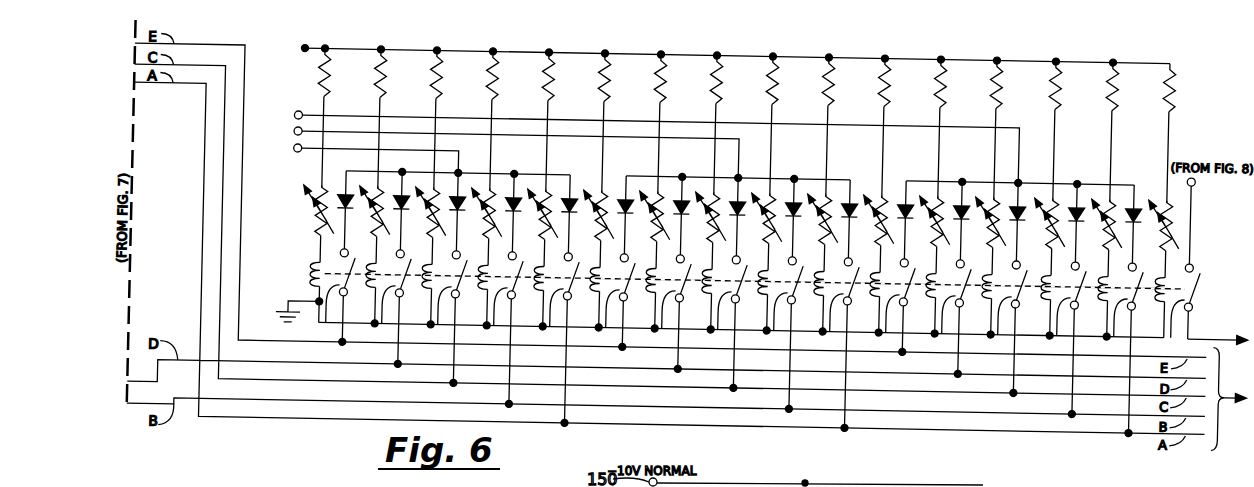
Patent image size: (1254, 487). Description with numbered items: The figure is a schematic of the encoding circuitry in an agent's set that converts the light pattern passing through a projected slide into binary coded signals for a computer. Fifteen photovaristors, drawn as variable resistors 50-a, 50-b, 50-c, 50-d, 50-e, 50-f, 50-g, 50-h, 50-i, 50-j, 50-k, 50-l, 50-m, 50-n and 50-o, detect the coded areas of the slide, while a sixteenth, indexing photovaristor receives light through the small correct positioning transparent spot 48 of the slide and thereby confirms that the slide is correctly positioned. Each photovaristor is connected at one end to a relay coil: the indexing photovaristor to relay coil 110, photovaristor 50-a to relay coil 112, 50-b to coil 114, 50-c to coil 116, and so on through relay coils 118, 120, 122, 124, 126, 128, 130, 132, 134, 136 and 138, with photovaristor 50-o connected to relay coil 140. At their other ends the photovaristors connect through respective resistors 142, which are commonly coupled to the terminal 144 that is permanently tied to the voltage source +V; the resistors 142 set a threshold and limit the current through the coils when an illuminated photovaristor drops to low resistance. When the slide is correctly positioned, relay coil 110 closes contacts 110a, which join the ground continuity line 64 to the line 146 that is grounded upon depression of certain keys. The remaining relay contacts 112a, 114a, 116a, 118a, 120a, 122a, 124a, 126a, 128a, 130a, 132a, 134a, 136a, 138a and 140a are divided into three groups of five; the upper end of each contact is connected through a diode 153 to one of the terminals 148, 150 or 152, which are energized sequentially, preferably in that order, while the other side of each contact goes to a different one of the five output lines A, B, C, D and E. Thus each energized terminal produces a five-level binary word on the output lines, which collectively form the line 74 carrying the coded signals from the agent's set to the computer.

The resistor 142 is at (434, 86).
The terminal 144 is at (303, 52).
The line 146 is at (1194, 189).
The terminal 148 is at (296, 113).
The terminal 150 is at (296, 129).
The terminal 152 is at (296, 146).
The diode 153 is at (347, 192).
The correct positioning transparent spot 48 is at (1158, 225).
The photovaristor 50-a is at (1101, 227).
The photovaristor 50-b is at (1044, 226).
The photovaristor 50-c is at (985, 224).
The photovaristor 50-d is at (929, 224).
The photovaristor 50-e is at (873, 223).
The photovaristor 50-f is at (817, 221).
The photovaristor 50-g is at (761, 221).
The photovaristor 50-h is at (705, 220).
The photovaristor 50-i is at (649, 217).
The photovaristor 50-j is at (593, 216).
The photovaristor 50-k is at (537, 216).
The photovaristor 50-l is at (481, 214).
The photovaristor 50-m is at (425, 216).
The photovaristor 50-n is at (369, 214).
The photovaristor 50-o is at (313, 213).
The relay coil 110 is at (1150, 306).
The relay coil 112 is at (1093, 305).
The relay coil 114 is at (1036, 304).
The relay coil 116 is at (977, 303).
The relay coil 118 is at (921, 302).
The relay coil 120 is at (865, 301).
The relay coil 122 is at (809, 300).
The relay coil 124 is at (753, 299).
The relay coil 126 is at (697, 298).
The relay coil 128 is at (641, 297).
The relay coil 130 is at (585, 296).
The relay coil 132 is at (529, 295).
The relay coil 134 is at (473, 294).
The relay coil 136 is at (417, 293).
The relay coil 138 is at (361, 292).
The relay coil 140 is at (316, 276).
The relay contacts 110a is at (1170, 310).
The relay contacts 112a is at (1113, 309).
The relay contacts 114a is at (1056, 308).
The relay contacts 116a is at (997, 307).
The relay contacts 118a is at (941, 306).
The relay contacts 120a is at (885, 305).
The relay contacts 122a is at (829, 304).
The relay contacts 124a is at (773, 303).
The relay contacts 126a is at (717, 302).
The relay contacts 128a is at (661, 301).
The relay contacts 130a is at (605, 300).
The relay contacts 132a is at (549, 299).
The relay contacts 134a is at (493, 298).
The relay contacts 136a is at (437, 297).
The relay contacts 138a is at (381, 296).
The relay contacts 140a is at (325, 295).
The ground continuity line 64 is at (1217, 323).
The line 74 is at (1233, 380).